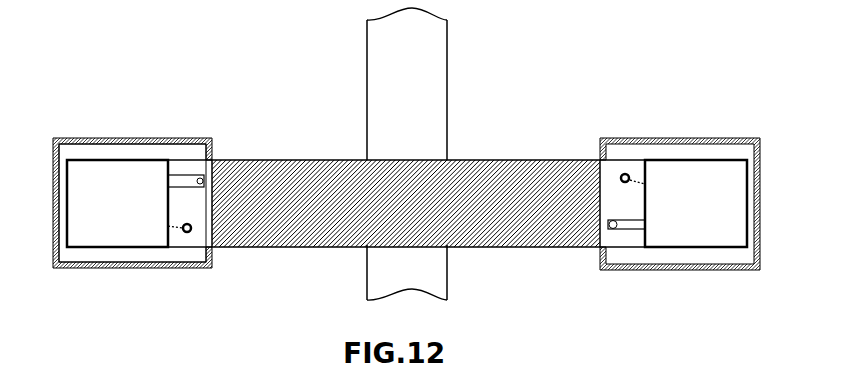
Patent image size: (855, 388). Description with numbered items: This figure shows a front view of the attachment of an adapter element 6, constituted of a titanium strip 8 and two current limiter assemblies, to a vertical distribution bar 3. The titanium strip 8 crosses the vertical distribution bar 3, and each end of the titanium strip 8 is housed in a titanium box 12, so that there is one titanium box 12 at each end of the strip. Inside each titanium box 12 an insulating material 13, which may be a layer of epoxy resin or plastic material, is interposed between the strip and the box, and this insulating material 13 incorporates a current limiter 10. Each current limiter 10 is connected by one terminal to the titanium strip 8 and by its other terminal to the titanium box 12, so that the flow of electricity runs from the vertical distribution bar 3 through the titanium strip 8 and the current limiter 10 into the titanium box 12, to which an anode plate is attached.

The vertical distribution bar 3 is at (445, 126).
The sensor assembly 6 is at (285, 104).
The titanium strip 8 is at (296, 160).
The current limiter 10 is at (107, 228).
The titanium box 12 is at (128, 138).
The insulating material 13 is at (101, 151).